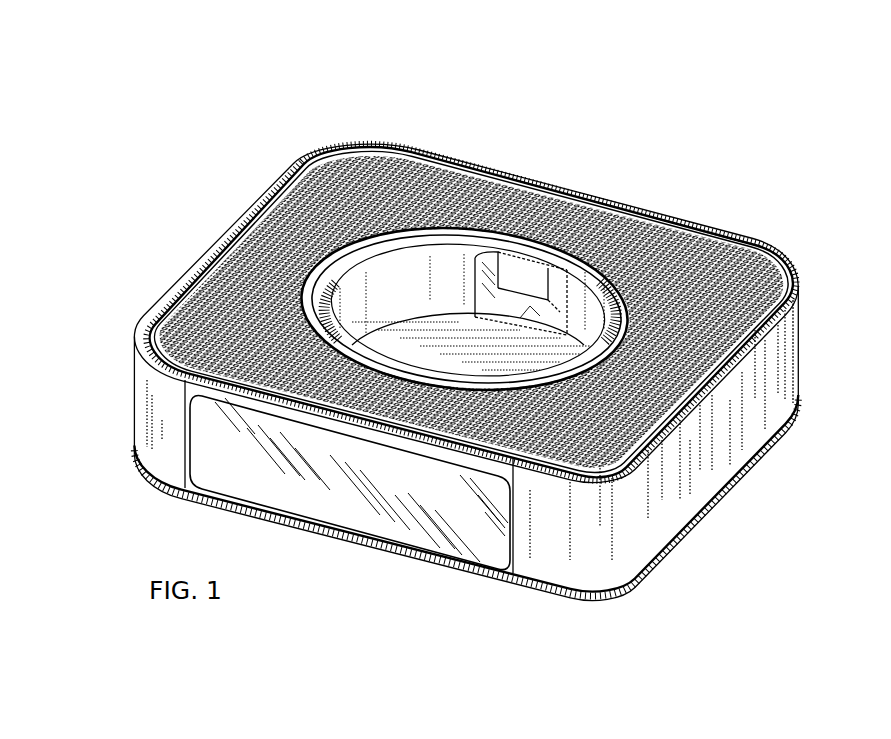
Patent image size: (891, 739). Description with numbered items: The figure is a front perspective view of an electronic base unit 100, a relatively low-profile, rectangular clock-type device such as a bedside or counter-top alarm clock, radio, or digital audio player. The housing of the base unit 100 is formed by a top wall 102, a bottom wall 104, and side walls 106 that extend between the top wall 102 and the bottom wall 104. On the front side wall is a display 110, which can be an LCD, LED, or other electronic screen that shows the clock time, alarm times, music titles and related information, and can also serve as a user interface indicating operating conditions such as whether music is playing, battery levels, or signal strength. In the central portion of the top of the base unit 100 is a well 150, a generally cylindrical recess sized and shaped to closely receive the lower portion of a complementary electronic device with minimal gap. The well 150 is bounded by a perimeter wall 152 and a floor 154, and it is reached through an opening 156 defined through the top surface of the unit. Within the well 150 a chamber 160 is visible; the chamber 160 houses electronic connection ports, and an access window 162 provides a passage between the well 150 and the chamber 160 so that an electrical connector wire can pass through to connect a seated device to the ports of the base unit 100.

The electronic base unit 100 is at (713, 117).
The top wall 102 is at (720, 263).
The bottom wall 104 is at (585, 600).
The side walls 106 is at (763, 377).
The display 110 is at (446, 530).
The well 150 is at (433, 270).
The perimeter wall 152 is at (377, 277).
The floor 154 is at (397, 350).
The opening 156 is at (393, 245).
The chamber 160 is at (552, 317).
The access window 162 is at (518, 257).